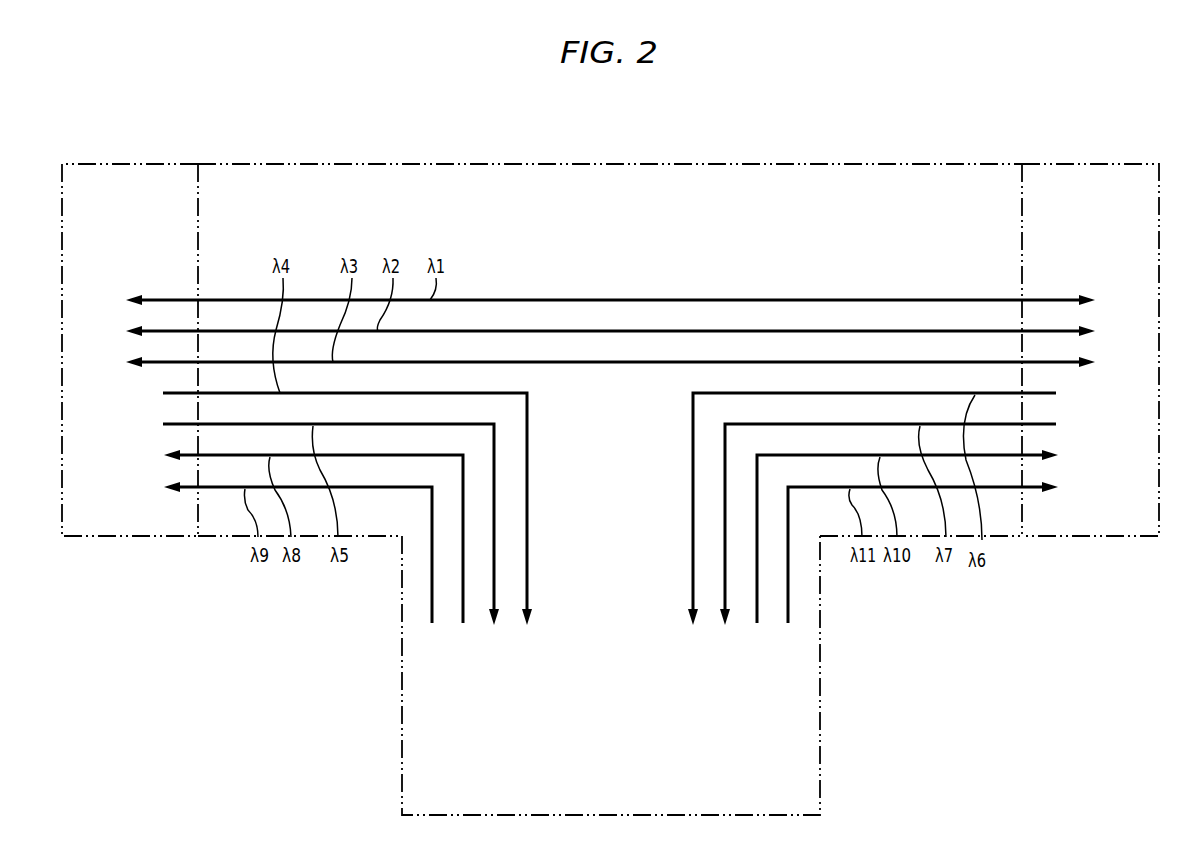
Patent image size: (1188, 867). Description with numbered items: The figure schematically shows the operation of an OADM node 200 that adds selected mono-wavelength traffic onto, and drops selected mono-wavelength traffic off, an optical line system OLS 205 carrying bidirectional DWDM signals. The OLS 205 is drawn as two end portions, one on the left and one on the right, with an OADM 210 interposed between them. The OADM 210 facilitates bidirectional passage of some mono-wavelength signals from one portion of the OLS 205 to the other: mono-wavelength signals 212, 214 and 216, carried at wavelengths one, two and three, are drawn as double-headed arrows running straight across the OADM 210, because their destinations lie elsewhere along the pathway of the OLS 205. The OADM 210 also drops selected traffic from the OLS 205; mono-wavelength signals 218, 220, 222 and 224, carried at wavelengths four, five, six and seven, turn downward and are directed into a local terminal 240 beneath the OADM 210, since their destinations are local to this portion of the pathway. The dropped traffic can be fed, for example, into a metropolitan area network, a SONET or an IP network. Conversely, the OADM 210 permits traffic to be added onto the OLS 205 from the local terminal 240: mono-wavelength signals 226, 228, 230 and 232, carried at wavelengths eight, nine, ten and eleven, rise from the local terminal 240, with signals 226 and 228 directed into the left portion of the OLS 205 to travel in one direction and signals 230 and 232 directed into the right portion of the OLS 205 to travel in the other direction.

The OADM node 200 is at (838, 118).
The OLS 205 is at (113, 178).
The OADM 210 is at (540, 175).
The mono-wavelength signal 212 is at (160, 300).
The mono-wavelength signal 214 is at (150, 331).
The mono-wavelength signal 216 is at (150, 362).
The mono-wavelength signal 218 is at (185, 393).
The mono-wavelength signal 220 is at (185, 424).
The mono-wavelength signal 222 is at (1033, 393).
The mono-wavelength signal 224 is at (1033, 424).
The mono-wavelength signal 226 is at (185, 455).
The mono-wavelength signal 228 is at (185, 487).
The mono-wavelength signal 230 is at (1033, 455).
The mono-wavelength signal 232 is at (1033, 487).
The local terminal 240 is at (798, 717).